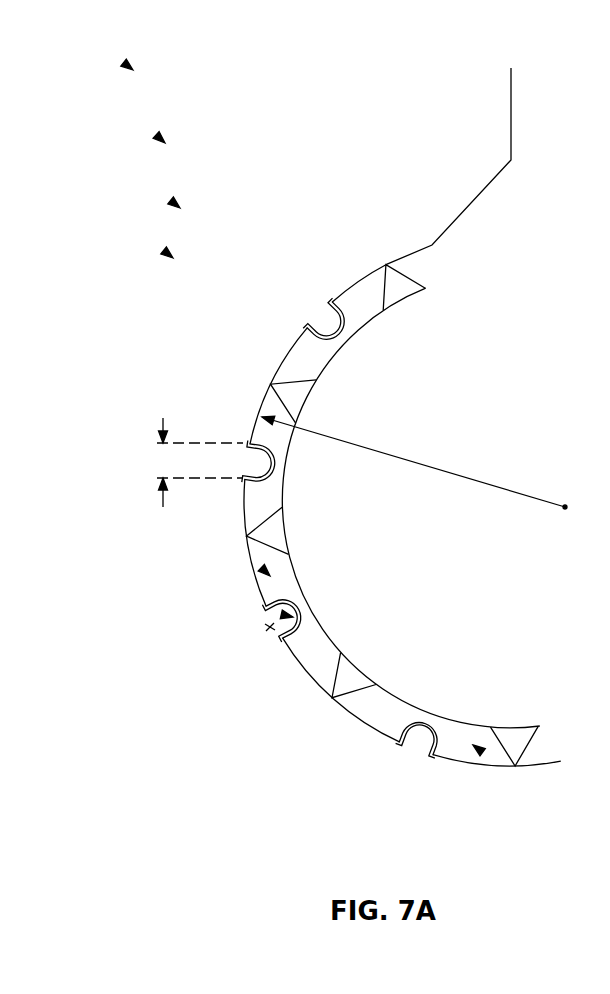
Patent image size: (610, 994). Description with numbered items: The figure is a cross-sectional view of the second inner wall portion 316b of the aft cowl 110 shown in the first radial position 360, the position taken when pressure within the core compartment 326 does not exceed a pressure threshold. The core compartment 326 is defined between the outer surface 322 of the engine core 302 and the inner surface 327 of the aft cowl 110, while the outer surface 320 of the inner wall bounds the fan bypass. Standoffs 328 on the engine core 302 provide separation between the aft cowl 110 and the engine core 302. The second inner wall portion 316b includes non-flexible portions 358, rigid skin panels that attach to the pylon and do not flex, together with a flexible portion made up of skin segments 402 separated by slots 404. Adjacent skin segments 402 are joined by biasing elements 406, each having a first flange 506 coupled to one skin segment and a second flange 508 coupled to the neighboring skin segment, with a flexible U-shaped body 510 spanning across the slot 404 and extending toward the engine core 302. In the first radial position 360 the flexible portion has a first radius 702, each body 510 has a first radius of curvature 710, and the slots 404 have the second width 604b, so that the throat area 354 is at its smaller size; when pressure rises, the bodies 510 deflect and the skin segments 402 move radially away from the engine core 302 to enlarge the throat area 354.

The aft cowl 110 is at (124, 62).
The second inner wall portion 316b is at (156, 133).
The first radial position 360 is at (171, 199).
The throat area 354 is at (164, 249).
The non-flexible portions 358 is at (483, 188).
The standoffs 328 is at (384, 266).
The slots 404 is at (332, 303).
The skin segments 402 is at (283, 352).
The second width 604b is at (163, 425).
The core compartment 326 is at (262, 570).
The biasing elements 406 is at (283, 615).
The first radius of curvature 710 is at (300, 625).
The inner surface 327 is at (307, 652).
The outer surface 322 is at (368, 724).
The outer surface 320 is at (432, 758).
The engine core 302 is at (448, 715).
The first radius 702 is at (404, 470).
The first flange 506 is at (347, 313).
The body 510 is at (337, 330).
The second flange 508 is at (312, 357).